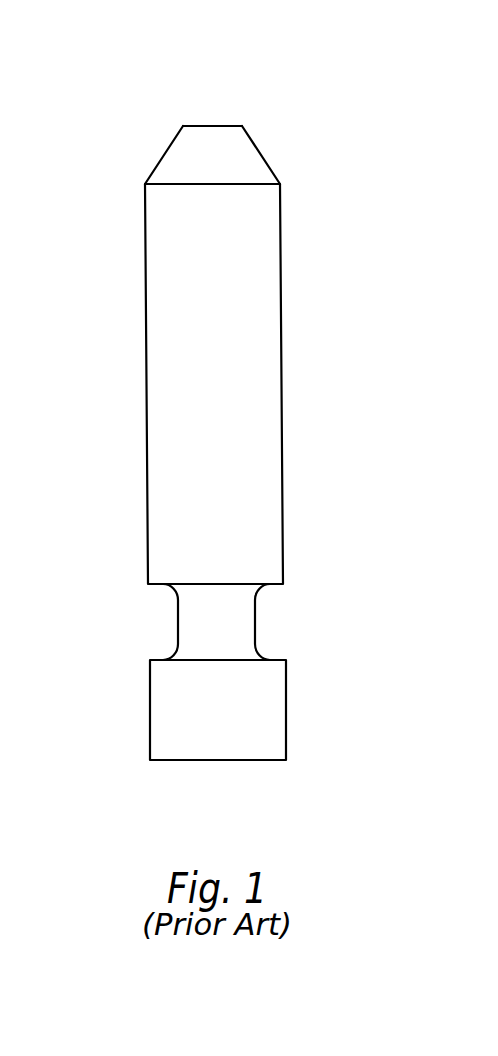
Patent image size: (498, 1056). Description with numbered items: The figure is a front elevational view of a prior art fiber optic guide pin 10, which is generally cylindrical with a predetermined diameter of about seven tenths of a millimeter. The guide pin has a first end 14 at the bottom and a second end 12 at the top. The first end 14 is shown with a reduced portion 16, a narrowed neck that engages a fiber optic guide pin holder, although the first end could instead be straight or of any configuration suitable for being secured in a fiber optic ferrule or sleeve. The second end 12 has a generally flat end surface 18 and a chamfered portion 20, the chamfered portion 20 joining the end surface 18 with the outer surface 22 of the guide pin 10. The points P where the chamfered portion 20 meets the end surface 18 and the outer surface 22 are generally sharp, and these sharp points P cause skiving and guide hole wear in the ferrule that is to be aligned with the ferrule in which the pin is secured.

The fiber optic guide pin 10 is at (217, 384).
The second end 12 is at (225, 96).
The first end 14 is at (268, 653).
The reduced portion 16 is at (258, 622).
The end surface 18 is at (215, 125).
The chamfered portion 20 is at (162, 157).
The outer surface 22 is at (282, 355).
The points P is at (241, 126).